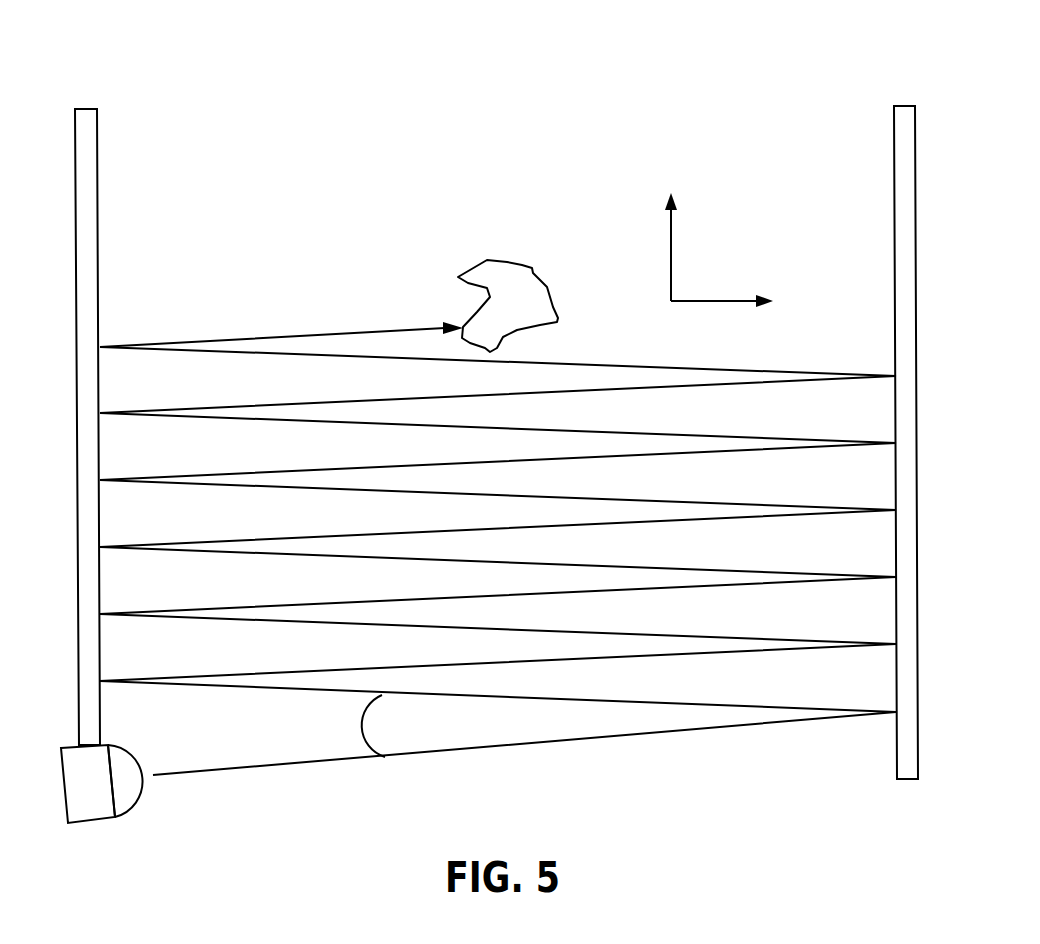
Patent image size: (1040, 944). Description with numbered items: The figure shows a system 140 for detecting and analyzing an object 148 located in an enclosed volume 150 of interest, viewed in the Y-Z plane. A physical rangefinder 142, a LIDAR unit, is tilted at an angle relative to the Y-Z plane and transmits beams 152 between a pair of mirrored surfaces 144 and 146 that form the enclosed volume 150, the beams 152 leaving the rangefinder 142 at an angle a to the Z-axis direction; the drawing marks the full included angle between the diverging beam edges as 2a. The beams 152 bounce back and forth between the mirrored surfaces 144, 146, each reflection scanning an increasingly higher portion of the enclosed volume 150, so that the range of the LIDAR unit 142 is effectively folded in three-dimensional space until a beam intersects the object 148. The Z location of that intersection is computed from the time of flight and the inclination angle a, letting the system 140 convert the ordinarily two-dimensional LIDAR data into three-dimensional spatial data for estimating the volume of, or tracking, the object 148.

The system for detecting and analyzing objects 140 is at (903, 71).
The physical rangefinder 142 is at (142, 805).
The mirrored surface 144 is at (97, 145).
The mirrored surface 146 is at (894, 176).
The object 148 is at (520, 262).
The enclosed volume 150 is at (266, 200).
The beams 152 is at (575, 740).
The beam divergence angle 2a is at (356, 726).